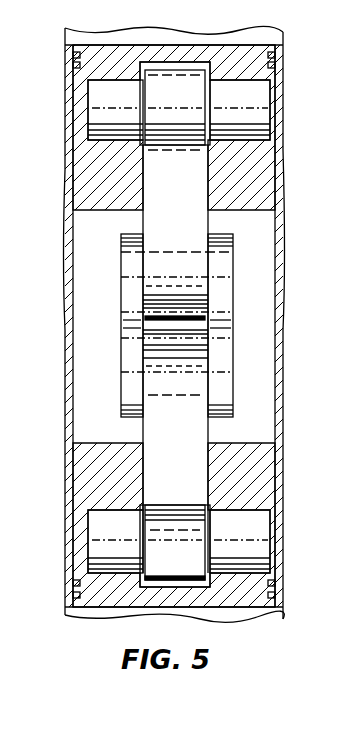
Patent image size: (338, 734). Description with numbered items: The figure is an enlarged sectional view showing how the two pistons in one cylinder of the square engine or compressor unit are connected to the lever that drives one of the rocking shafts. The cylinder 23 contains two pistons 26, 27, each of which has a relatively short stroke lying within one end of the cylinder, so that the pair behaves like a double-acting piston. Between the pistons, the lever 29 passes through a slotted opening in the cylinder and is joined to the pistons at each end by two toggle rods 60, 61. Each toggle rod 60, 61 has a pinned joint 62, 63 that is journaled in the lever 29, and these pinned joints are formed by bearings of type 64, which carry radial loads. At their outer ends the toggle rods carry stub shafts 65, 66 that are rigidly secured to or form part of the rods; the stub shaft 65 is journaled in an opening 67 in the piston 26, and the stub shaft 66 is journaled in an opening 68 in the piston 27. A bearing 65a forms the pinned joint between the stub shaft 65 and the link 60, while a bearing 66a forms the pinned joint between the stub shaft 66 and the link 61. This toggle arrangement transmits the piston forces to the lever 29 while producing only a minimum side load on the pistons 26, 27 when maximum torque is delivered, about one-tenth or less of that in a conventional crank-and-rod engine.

The cylinder 23 is at (75, 283).
The piston 26 is at (95, 172).
The piston 27 is at (82, 501).
The lever 29 is at (128, 326).
The toggle rod 60 is at (134, 218).
The toggle rod 61 is at (134, 424).
The pinned joint 62 is at (134, 364).
The pinned joint 63 is at (134, 294).
The bearing 64 is at (197, 283).
The stub shaft 65 is at (247, 109).
The bearing 65a is at (192, 109).
The stub shaft 66 is at (130, 533).
The bearing 66a is at (196, 559).
The opening 67 is at (132, 84).
The opening 68 is at (258, 514).